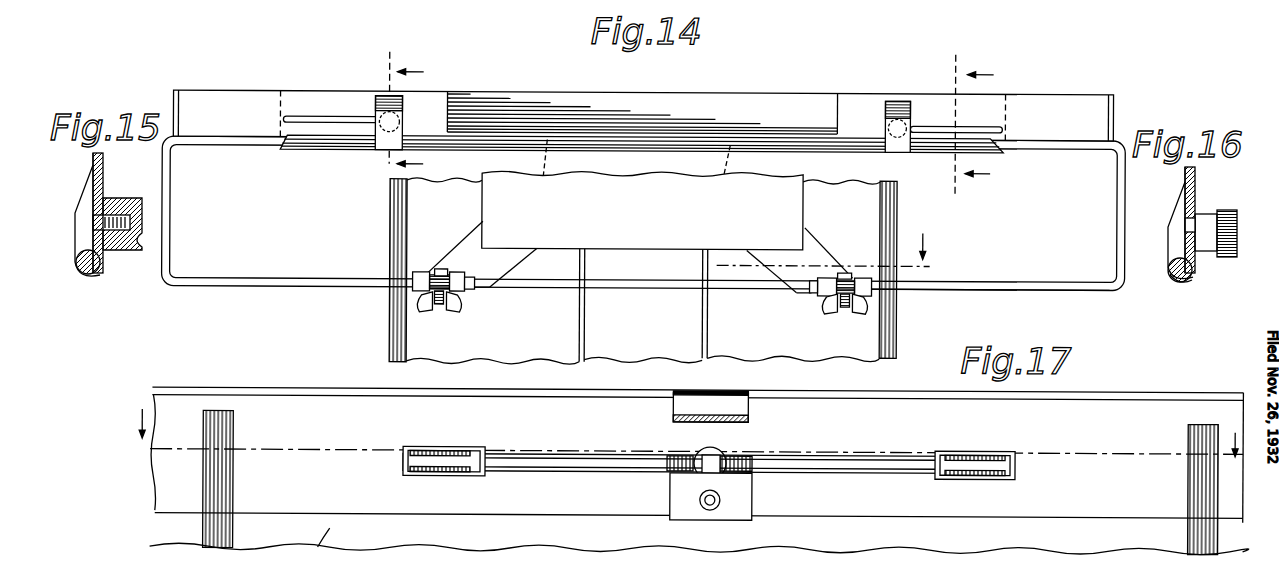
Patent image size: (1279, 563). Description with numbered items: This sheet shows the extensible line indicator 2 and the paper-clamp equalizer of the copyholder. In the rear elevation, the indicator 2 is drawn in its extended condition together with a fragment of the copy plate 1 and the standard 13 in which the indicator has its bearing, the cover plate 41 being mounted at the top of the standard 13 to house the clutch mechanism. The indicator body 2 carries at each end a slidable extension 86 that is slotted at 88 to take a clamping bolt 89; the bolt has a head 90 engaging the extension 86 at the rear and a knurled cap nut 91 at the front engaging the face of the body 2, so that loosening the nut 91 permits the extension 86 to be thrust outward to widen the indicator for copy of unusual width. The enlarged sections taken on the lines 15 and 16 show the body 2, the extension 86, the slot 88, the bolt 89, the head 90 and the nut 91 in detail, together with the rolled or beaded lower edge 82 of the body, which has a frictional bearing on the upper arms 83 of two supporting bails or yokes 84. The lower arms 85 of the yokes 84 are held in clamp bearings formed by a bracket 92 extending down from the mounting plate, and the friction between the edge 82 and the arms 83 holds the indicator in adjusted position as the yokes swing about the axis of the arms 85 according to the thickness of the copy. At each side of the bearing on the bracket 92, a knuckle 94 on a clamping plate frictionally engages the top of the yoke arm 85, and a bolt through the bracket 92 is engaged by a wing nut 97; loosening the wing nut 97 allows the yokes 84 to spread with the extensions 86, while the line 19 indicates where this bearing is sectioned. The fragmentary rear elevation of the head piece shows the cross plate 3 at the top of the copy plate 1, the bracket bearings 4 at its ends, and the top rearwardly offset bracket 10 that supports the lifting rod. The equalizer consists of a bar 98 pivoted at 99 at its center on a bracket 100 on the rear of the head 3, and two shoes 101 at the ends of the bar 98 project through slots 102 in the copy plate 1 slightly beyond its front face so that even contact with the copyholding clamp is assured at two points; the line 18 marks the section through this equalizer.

In FIG. 14, the copy plate 1 is at (878, 338).
In FIG. 14, the line indicator 2 is at (793, 92).
In FIG. 15, the line indicator 2 is at (104, 158).
In FIG. 16, the line indicator 2 is at (1197, 178).
In FIG. 17, the cross plate 3 is at (515, 405).
In FIG. 17, the bracket bearings 4 is at (322, 545).
In FIG. 17, the top rearwardly offset bracket 10 is at (748, 422).
In FIG. 14, the standard 13 is at (580, 277).
In FIG. 14, the section line 15- 15 is at (398, 115).
In FIG. 14, the section line 16- 16 is at (970, 126).
In FIG. 17, the section line 18- 18 is at (88, 449).
In FIG. 14, the section line 19- 19 is at (713, 266).
In FIG. 14, the cover plate 41 is at (642, 210).
In FIG. 16, the rolled or beaded lower edge 82 is at (1180, 282).
In FIG. 14, the upper arms 83 is at (1043, 151).
In FIG. 15, the upper arms 83 is at (80, 269).
In FIG. 16, the upper arms 83 is at (1193, 274).
In FIG. 14, the supporting bails or yokes 84 is at (1120, 213).
In FIG. 14, the lower arms 85 is at (998, 288).
In FIG. 14, the extension 86 is at (320, 93).
In FIG. 15, the extension 86 is at (93, 158).
In FIG. 16, the extension 86 is at (1185, 188).
In FIG. 14, the slot 88 is at (927, 128).
In FIG. 16, the slot 88 is at (1185, 230).
In FIG. 15, the clamping bolt 89 is at (115, 207).
In FIG. 14, the head 90 is at (387, 134).
In FIG. 15, the head 90 is at (82, 207).
In FIG. 16, the head 90 is at (1173, 240).
In FIG. 15, the knurled cap nut 91 is at (132, 248).
In FIG. 16, the knurled cap nut 91 is at (1225, 211).
In FIG. 14, the bracket 92 is at (484, 284).
In FIG. 14, the knuckle 94 is at (465, 277).
In FIG. 14, the wing nut 97 is at (450, 309).
In FIG. 17, the bar 98 is at (603, 472).
In FIG. 17, the pivot 99 is at (727, 442).
In FIG. 17, the bracket 100 is at (750, 495).
In FIG. 17, the shoes 101 is at (465, 469).
In FIG. 17, the slots 102 is at (443, 448).